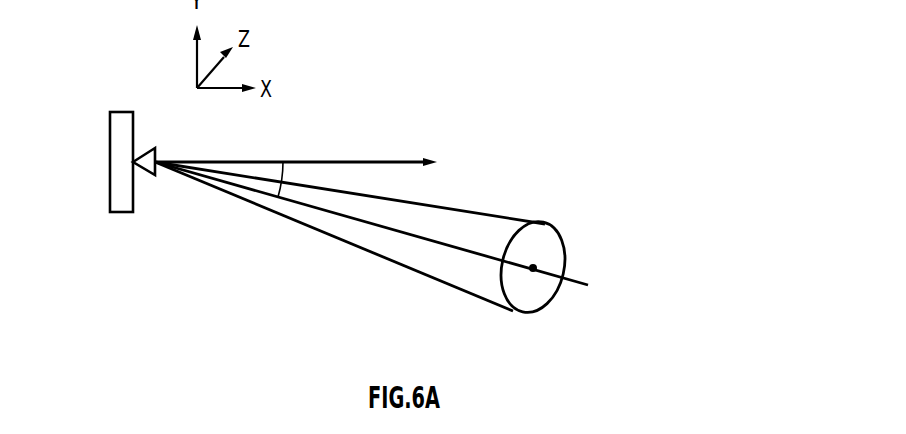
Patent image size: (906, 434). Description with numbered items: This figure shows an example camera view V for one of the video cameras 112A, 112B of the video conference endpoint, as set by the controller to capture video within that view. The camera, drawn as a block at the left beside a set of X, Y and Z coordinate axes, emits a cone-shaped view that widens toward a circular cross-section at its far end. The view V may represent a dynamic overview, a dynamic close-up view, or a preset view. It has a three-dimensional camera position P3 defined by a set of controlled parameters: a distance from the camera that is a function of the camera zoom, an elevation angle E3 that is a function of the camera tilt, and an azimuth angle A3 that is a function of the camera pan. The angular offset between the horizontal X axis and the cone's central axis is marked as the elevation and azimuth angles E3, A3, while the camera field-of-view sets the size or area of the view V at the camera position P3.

The video camera 112A is at (94, 144).
The video camera 112B is at (110, 128).
The camera position P3 is at (605, 205).
The elevation angle E3 is at (333, 179).
The azimuth angle A3 is at (285, 172).